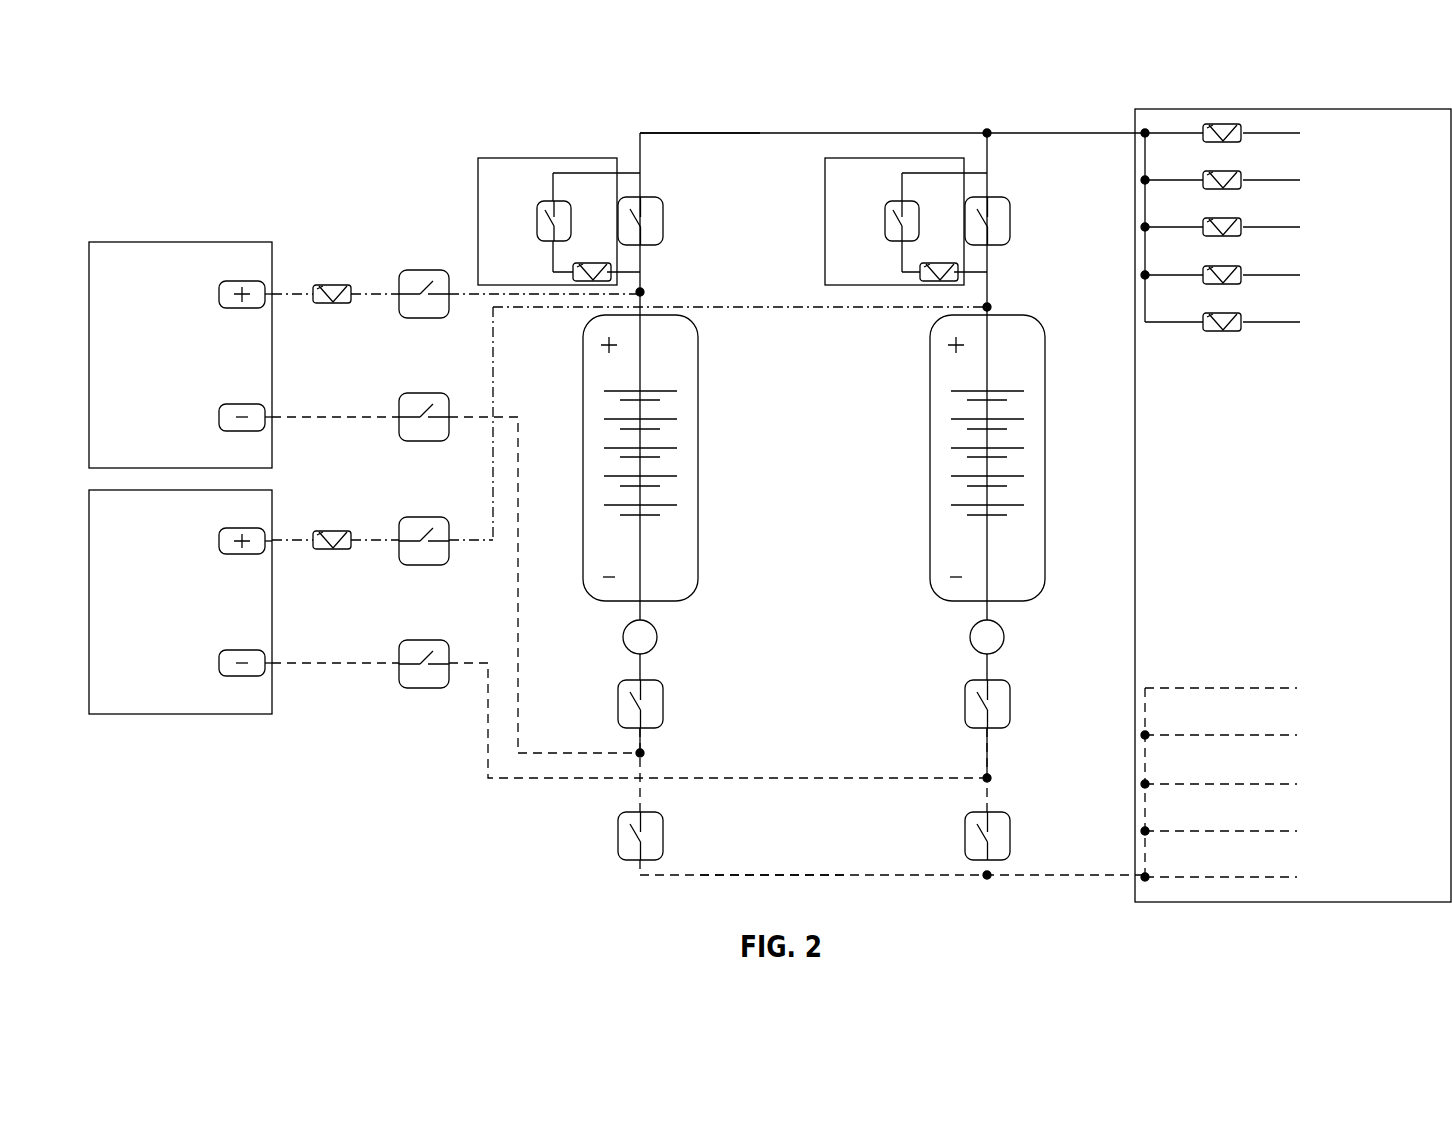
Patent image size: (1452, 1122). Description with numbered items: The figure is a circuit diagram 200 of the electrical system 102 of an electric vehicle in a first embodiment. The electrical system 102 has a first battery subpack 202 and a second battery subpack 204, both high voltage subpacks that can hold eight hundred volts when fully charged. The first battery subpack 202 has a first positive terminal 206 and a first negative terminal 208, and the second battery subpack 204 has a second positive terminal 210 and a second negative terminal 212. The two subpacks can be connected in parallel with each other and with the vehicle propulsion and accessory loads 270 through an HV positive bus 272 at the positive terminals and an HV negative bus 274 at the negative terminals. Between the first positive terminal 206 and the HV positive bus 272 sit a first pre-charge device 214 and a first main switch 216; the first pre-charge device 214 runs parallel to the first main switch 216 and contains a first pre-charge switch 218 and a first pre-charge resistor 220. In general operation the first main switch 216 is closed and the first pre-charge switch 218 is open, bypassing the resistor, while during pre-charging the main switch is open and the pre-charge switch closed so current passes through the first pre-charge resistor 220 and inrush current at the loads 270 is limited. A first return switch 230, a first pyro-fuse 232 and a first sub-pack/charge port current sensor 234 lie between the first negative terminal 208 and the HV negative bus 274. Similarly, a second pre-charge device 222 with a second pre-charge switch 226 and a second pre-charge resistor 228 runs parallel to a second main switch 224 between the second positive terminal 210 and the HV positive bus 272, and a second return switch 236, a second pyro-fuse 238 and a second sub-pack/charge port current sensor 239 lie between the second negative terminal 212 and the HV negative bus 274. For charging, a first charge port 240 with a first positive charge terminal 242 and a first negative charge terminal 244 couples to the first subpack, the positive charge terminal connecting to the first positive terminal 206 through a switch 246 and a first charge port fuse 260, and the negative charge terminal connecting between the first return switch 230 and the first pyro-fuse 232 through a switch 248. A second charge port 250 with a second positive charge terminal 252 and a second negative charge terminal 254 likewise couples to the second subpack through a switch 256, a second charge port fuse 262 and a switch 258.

The circuit diagram 200 is at (158, 84).
The electrical system 102 is at (1392, 75).
The vehicle propulsion and accessory loads 270 is at (1385, 109).
The first battery subpack 202 is at (698, 535).
The second battery subpack 204 is at (1045, 535).
The first positive terminal 206 is at (600, 346).
The first negative terminal 208 is at (607, 587).
The second positive terminal 210 is at (947, 346).
The second negative terminal 212 is at (954, 587).
The first pre-charge device 214 is at (478, 172).
The first main switch 216 is at (648, 197).
The first pre-charge switch 218 is at (552, 201).
The first pre-charge resistor 220 is at (598, 262).
The second pre-charge device 222 is at (825, 172).
The second main switch 224 is at (995, 197).
The second pre-charge switch 226 is at (900, 201).
The second pre-charge resistor 228 is at (945, 262).
The first return switch 230 is at (618, 836).
The first pyro-fuse 232 is at (618, 703).
The first sub-pack/charge port current sensor 234 is at (628, 650).
The second return switch 236 is at (965, 836).
The second pyro-fuse 238 is at (965, 703).
The second sub-pack/charge port current sensor 239 is at (975, 650).
The first charge port 240 is at (220, 242).
The first positive charge terminal 242 is at (238, 281).
The first negative charge terminal 244 is at (238, 431).
The switch 246 is at (399, 300).
The switch 248 is at (399, 412).
The second charge port 250 is at (155, 714).
The second positive charge terminal 252 is at (238, 528).
The second negative charge terminal 254 is at (238, 676).
The switch 256 is at (399, 547).
The switch 258 is at (399, 670).
The first charge port fuse 260 is at (328, 285).
The second charge port fuse 262 is at (328, 531).
The HV positive bus 272 is at (728, 133).
The HV negative bus 274 is at (770, 872).